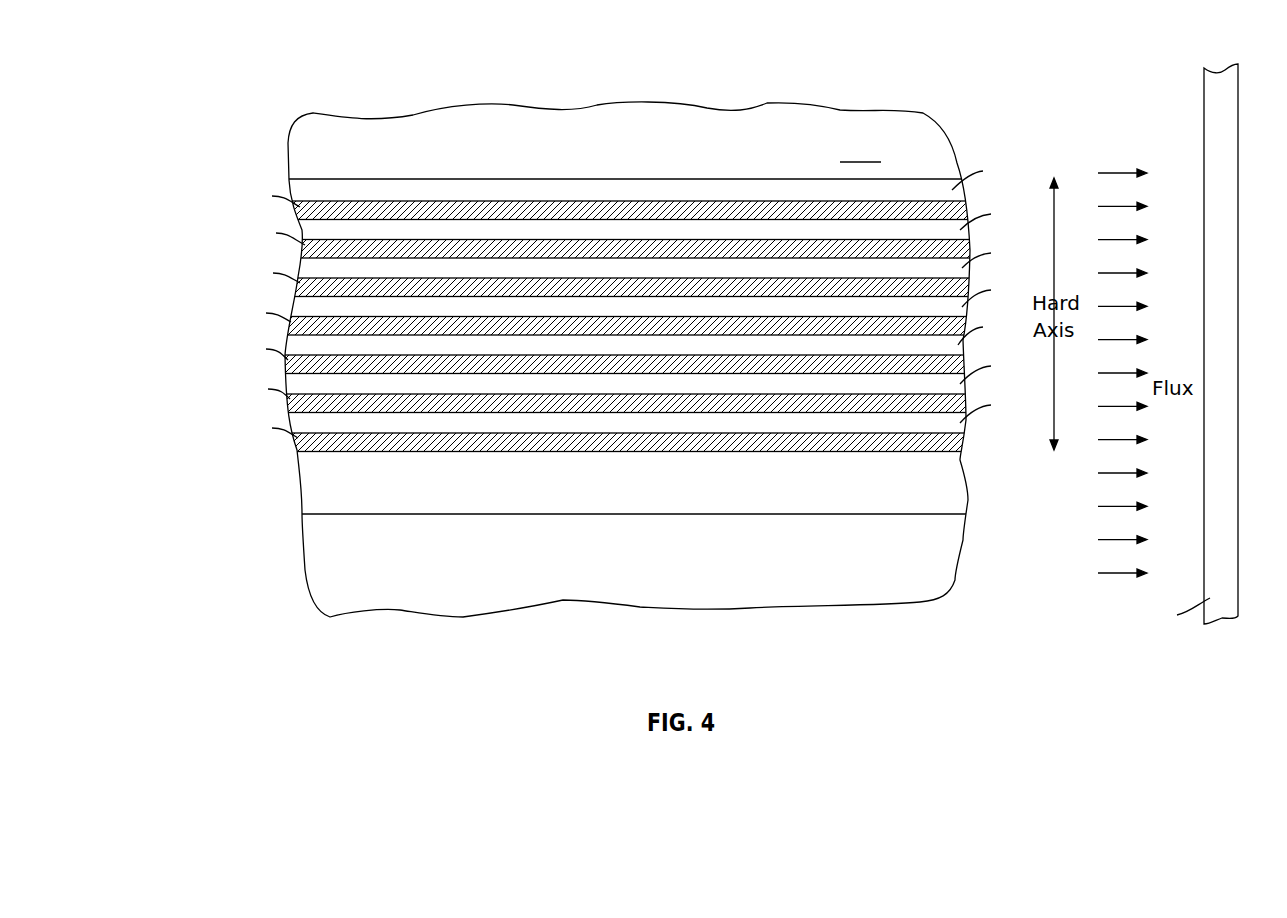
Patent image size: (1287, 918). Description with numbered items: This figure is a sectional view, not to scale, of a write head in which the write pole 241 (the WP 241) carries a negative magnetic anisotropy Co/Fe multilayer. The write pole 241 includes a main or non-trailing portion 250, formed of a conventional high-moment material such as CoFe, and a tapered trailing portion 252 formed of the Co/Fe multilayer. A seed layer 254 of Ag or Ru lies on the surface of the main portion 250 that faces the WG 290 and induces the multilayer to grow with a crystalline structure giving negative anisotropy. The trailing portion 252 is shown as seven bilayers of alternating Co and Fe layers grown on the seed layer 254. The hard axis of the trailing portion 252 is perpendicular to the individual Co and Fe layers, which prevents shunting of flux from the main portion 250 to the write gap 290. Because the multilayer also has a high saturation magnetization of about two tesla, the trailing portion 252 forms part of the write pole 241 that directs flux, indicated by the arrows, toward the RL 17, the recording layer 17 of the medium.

The write pole 241 is at (167, 623).
The tapered trailing portion 252 is at (233, 180).
The seed layer 254 is at (952, 477).
The main portion 250 is at (950, 539).
The write gap 290 is at (927, 140).
The recording layer 17 is at (1210, 97).
The write gap WG is at (860, 151).
The recording layer RL is at (1178, 614).